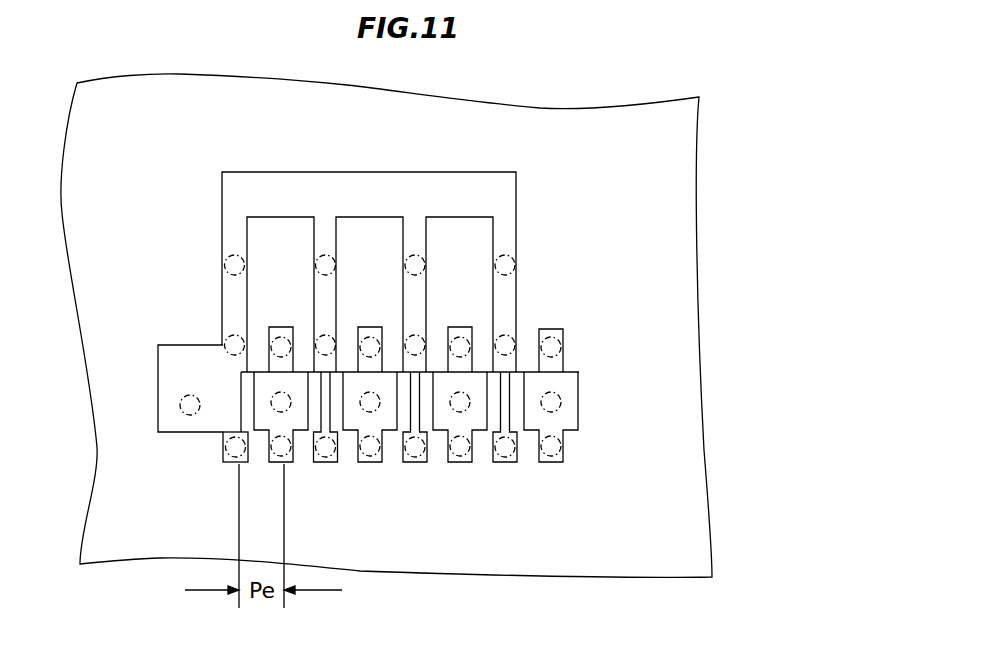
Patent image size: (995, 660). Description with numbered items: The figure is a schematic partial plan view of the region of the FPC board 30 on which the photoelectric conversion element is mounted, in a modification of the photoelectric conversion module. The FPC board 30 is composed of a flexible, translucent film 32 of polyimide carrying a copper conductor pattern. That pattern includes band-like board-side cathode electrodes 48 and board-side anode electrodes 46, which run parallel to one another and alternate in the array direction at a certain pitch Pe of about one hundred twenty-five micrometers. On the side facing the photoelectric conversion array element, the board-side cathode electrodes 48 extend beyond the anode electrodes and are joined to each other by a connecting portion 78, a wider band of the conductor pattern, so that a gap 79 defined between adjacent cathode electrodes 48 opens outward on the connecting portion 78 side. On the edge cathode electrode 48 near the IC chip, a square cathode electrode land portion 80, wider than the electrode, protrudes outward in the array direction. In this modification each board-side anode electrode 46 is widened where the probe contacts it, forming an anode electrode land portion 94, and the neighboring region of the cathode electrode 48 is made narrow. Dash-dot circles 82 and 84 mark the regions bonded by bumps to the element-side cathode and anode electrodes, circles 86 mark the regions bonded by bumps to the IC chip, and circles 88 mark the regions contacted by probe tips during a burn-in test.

The FPC board 30 is at (634, 134).
The film 32 is at (578, 140).
The board-side anode electrode 46 is at (284, 462).
The board-side cathode electrode 48 is at (326, 245).
The connecting portion 78 is at (355, 195).
The gap 79 is at (269, 244).
The cathode electrode land portion 80 is at (191, 358).
The circles 82 is at (516, 263).
The circle 84 is at (565, 331).
The circles 86 is at (556, 428).
The circles 88 is at (289, 393).
The anode electrode land portion 94 is at (256, 372).